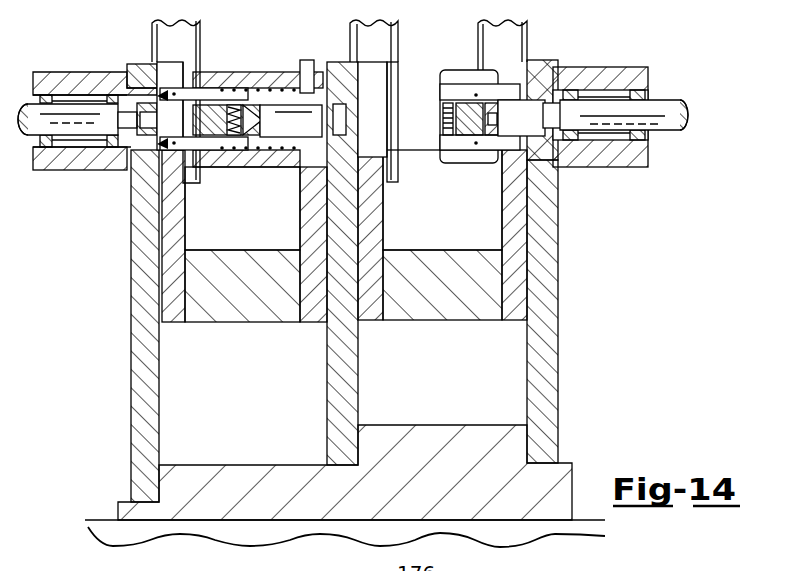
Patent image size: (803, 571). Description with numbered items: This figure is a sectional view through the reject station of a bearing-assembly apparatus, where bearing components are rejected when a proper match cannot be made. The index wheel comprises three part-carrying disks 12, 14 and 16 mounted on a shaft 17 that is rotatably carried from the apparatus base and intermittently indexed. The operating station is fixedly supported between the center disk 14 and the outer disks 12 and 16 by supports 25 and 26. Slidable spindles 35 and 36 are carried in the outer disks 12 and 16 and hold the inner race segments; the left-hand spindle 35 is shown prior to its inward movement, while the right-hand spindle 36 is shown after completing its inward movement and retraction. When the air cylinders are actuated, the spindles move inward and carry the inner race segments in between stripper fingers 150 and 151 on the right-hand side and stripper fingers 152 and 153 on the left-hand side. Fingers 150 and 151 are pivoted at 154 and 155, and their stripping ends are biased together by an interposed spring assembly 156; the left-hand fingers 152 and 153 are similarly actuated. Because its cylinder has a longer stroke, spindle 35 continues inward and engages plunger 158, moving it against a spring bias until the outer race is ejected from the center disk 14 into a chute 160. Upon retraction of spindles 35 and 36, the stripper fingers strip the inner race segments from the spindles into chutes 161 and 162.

The part-carrying disk 12 is at (157, 382).
The center disk 14 is at (352, 382).
The part-carrying disk 16 is at (550, 382).
The shaft 17 is at (360, 532).
The support 25 is at (172, 220).
The support 26 is at (372, 220).
The spindle 35 is at (37, 118).
The spindle 36 is at (673, 132).
The stripper finger 150 is at (546, 60).
The stripper finger 151 is at (548, 147).
The stripper finger 152 is at (147, 68).
The stripper finger 153 is at (160, 175).
The pivot 154 is at (476, 92).
The pivot 155 is at (477, 144).
The spring assembly 156 is at (446, 113).
The plunger 158 is at (215, 108).
The chute 160 is at (390, 30).
The chute 161 is at (196, 31).
The chute 162 is at (524, 30).